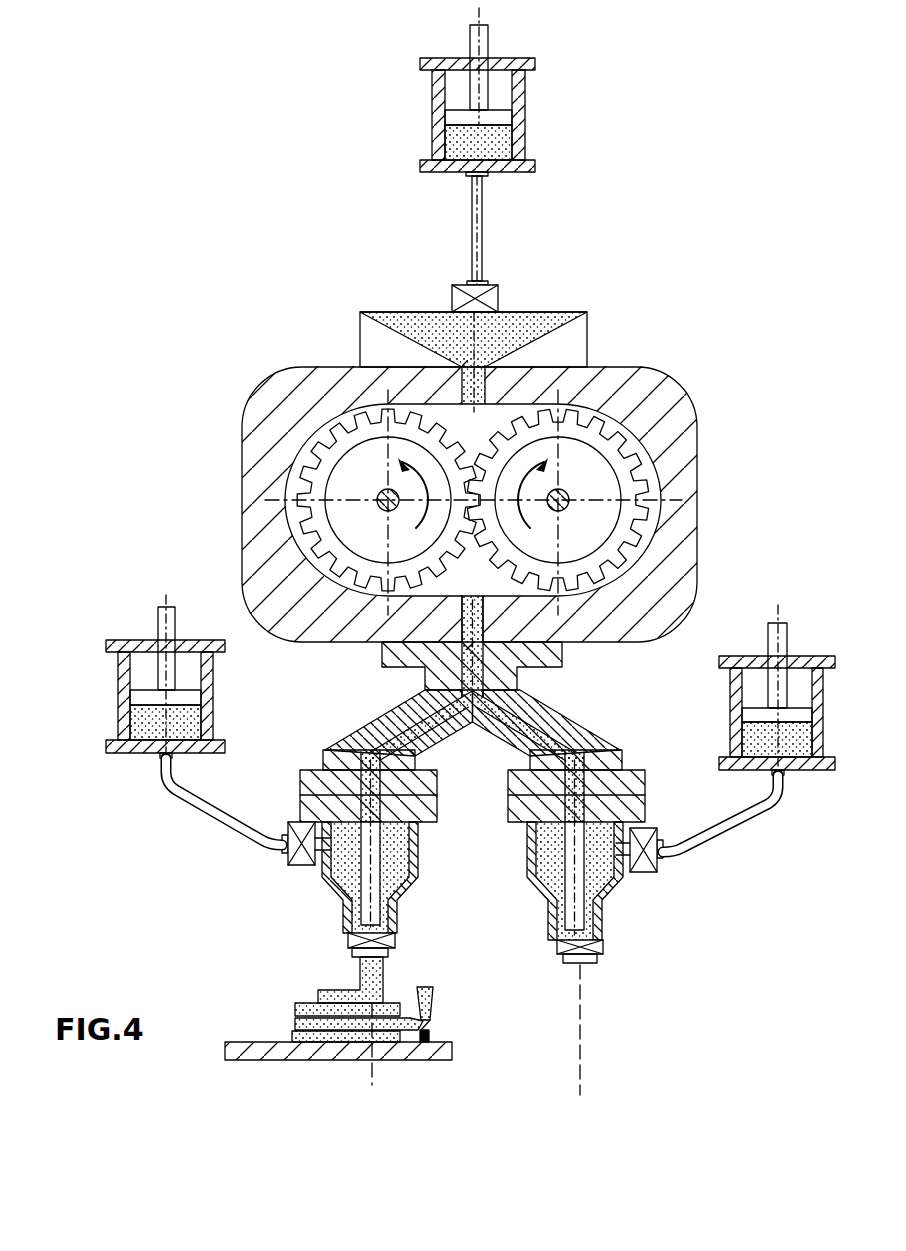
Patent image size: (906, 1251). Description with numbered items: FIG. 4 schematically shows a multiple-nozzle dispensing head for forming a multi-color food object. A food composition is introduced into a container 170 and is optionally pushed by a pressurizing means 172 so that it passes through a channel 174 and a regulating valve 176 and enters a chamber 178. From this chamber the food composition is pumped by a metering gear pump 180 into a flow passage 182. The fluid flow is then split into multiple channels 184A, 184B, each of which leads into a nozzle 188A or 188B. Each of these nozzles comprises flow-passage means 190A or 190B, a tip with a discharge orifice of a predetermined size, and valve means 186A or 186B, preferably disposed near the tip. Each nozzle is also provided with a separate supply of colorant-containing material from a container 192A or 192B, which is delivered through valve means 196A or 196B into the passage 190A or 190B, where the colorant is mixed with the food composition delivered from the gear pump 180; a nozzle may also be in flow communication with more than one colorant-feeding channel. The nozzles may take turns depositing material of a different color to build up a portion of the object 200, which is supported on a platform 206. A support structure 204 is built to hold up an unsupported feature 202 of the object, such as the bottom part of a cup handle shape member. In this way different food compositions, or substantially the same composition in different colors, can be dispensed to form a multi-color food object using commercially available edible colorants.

The container 170 is at (563, 133).
The pressurizing means 172 is at (533, 14).
The channel 174 is at (480, 238).
The regulating valve 176 is at (488, 284).
The chamber 178 is at (517, 334).
The metering gear pump 180 is at (700, 489).
The flow passage 182 is at (484, 627).
The channel 184A is at (403, 722).
The channel 184B is at (528, 720).
The valve means 186A is at (348, 937).
The valve means 186B is at (604, 945).
The nozzle 188A is at (328, 896).
The nozzle 188B is at (627, 900).
The flow-passage means 190A is at (384, 866).
The flow-passage means 190B is at (567, 868).
The container 192A is at (112, 721).
The container 192B is at (725, 735).
The valve means 196A is at (305, 862).
The valve means 196B is at (646, 865).
The object 200 is at (291, 1002).
The unsupported feature 202 is at (432, 1022).
The support structure 204 is at (429, 1035).
The platform 206 is at (408, 1058).